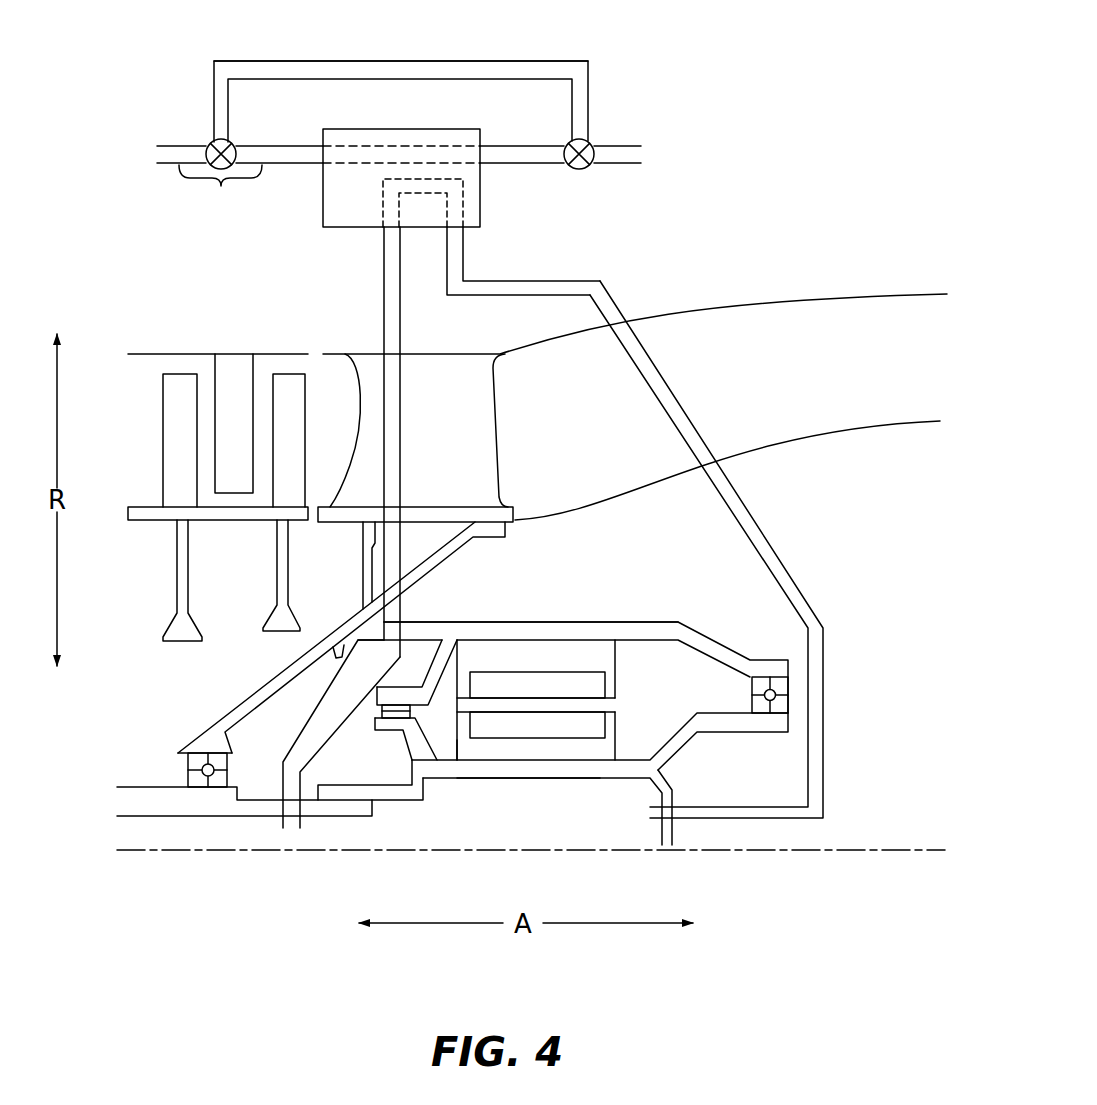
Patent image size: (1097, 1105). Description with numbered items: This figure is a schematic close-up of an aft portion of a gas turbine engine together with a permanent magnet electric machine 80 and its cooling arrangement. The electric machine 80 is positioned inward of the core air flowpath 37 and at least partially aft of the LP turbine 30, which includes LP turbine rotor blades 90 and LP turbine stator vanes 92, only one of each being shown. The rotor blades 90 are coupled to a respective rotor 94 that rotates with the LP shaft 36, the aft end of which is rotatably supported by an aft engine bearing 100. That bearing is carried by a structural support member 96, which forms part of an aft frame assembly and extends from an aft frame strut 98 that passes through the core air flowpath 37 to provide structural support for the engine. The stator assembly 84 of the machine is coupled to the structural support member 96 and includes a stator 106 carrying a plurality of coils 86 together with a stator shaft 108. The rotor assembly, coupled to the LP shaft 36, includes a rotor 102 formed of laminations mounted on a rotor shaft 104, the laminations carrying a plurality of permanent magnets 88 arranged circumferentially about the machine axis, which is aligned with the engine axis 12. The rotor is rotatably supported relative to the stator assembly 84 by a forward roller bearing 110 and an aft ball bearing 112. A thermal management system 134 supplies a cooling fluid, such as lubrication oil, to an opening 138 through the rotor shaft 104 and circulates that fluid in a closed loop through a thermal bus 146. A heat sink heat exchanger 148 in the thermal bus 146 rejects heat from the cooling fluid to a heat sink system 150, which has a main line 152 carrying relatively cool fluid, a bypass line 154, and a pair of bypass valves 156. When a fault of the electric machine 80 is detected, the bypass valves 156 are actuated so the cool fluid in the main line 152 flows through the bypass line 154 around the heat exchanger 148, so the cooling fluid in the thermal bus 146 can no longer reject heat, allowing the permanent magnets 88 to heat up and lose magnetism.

The axis 12 is at (837, 853).
The LP turbine 30 is at (184, 334).
The LP shaft 36 is at (150, 797).
The core air flowpath 37 is at (151, 468).
The permanent magnet electric machine 80 is at (611, 559).
The stator assembly 84 is at (566, 621).
The coils 86 is at (507, 683).
The permanent magnets 88 is at (548, 727).
The LP turbine rotor blades 90 is at (173, 427).
The LP turbine stator vanes 92 is at (238, 368).
The rotor 94 is at (183, 583).
The structural support member 96 is at (345, 627).
The aft frame strut 98 is at (498, 420).
The aft engine bearing 100 is at (187, 768).
The rotor 102 is at (477, 752).
The shaft 104 is at (522, 778).
The stator 106 is at (485, 652).
The shaft 108 is at (650, 627).
The forward roller bearing 110 is at (378, 707).
The aft ball bearing 112 is at (751, 705).
The thermal management system 134 is at (628, 280).
The opening 138 is at (421, 823).
The thermal bus 146 is at (520, 281).
The heat sink heat exchanger 148 is at (378, 129).
The heat sink system 150 is at (619, 97).
The main line 152 is at (399, 181).
The bypass line 154 is at (513, 61).
The bypass valve 156 is at (211, 143).